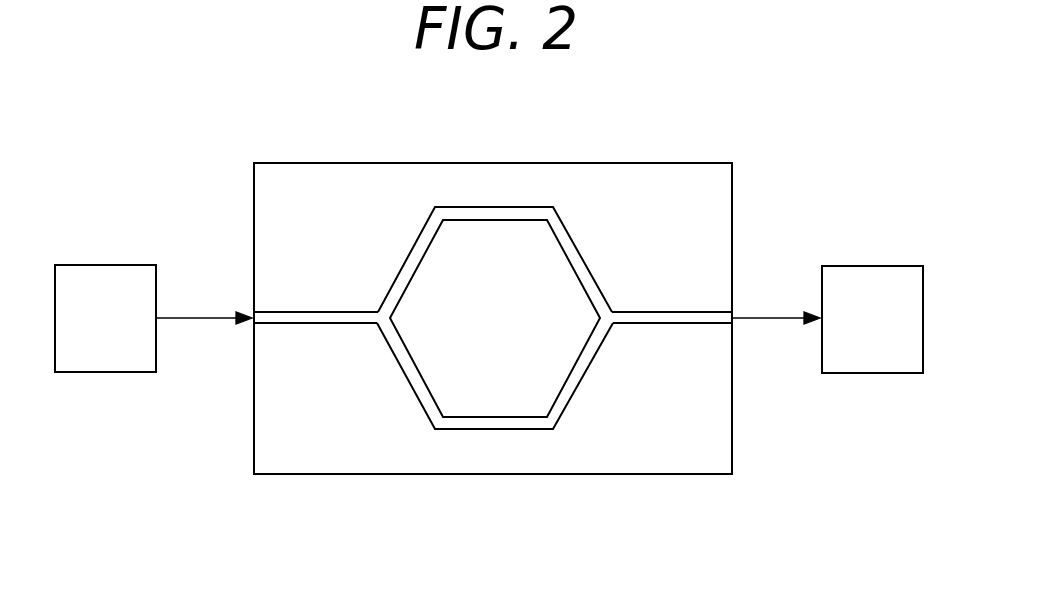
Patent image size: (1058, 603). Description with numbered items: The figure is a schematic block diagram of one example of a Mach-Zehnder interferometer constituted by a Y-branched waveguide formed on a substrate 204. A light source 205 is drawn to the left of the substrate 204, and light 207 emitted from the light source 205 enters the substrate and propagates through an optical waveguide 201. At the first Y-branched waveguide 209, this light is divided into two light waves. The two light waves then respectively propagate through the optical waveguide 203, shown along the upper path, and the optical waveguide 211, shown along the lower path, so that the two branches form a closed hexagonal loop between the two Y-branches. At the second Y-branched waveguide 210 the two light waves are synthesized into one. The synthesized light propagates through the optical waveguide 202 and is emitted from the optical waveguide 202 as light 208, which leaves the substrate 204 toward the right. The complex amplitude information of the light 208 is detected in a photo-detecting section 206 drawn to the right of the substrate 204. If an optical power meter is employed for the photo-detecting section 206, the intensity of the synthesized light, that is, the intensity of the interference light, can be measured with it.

The optical waveguide 201 is at (290, 320).
The optical waveguide 202 is at (683, 316).
The optical waveguide 203 is at (505, 207).
The substrate 204 is at (320, 170).
The light source 205 is at (115, 265).
The photo-detecting section 206 is at (878, 266).
The light 207 is at (200, 320).
The light 208 is at (780, 320).
The first Y-branched waveguide 209 is at (377, 327).
The second Y-branched waveguide 210 is at (608, 318).
The optical waveguide 211 is at (483, 430).